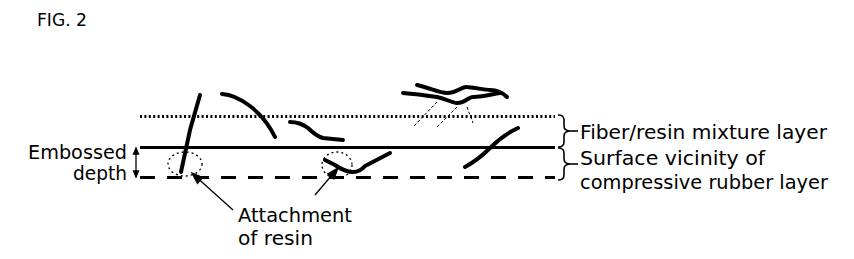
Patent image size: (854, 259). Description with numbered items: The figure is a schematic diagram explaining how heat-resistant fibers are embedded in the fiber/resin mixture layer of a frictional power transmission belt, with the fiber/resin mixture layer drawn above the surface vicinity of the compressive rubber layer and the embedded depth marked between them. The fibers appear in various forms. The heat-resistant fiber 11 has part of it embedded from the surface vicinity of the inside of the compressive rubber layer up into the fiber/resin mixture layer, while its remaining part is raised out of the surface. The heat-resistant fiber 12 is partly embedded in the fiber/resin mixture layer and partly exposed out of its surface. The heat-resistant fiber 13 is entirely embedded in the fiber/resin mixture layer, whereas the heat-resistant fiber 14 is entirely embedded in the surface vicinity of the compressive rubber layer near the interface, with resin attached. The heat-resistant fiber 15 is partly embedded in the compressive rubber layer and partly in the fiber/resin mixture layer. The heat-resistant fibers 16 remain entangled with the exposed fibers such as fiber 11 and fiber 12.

The heat-resistant fiber 11 is at (187, 123).
The heat-resistant fiber 12 is at (255, 94).
The heat-resistant fiber 13 is at (326, 123).
The heat-resistant fiber 14 is at (370, 179).
The heat-resistant fiber 15 is at (487, 166).
The heat-resistant fibers 16 is at (508, 84).